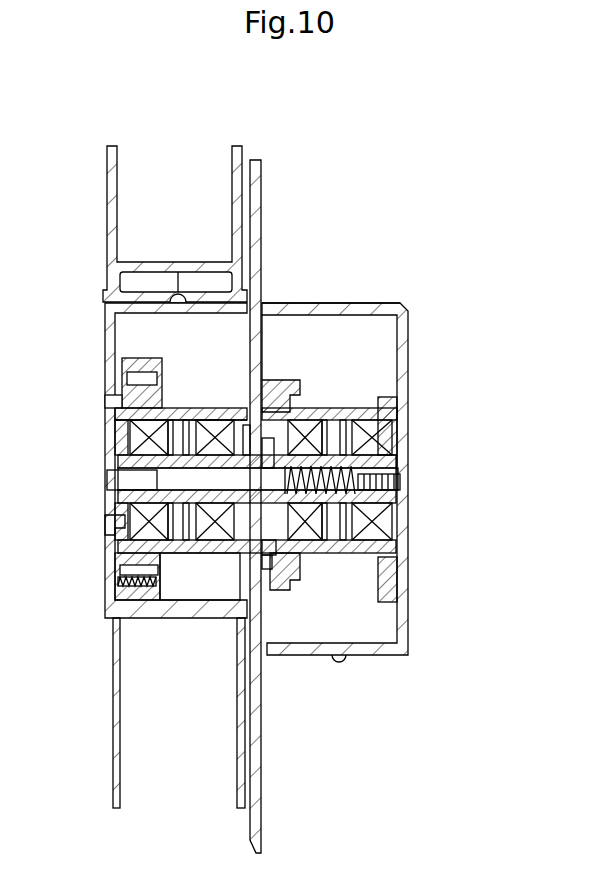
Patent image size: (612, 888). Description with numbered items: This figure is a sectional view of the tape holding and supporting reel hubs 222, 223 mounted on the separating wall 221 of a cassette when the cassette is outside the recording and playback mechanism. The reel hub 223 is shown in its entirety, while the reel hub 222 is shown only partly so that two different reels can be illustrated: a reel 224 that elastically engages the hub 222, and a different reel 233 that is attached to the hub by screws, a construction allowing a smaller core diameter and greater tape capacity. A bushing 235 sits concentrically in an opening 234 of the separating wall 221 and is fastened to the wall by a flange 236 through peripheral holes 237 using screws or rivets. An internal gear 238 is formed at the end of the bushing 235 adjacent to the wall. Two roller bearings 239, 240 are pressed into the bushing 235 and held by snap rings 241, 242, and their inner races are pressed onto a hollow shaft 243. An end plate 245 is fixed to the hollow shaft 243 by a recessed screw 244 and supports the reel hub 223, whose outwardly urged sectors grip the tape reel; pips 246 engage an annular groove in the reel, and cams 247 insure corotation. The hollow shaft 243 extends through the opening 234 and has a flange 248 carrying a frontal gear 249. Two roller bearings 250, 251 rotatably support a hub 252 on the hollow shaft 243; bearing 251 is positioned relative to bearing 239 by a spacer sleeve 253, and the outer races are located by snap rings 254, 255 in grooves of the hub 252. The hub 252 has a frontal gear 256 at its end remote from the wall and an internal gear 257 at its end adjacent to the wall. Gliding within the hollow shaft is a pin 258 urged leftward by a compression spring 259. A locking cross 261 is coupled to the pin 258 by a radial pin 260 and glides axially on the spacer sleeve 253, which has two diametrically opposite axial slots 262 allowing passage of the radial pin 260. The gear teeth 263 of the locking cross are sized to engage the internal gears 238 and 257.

The separating wall 221 is at (257, 207).
The reel hub 222 is at (112, 322).
The reel hub 223 is at (402, 336).
The reel 224 is at (115, 214).
The reel 233 is at (115, 604).
The opening 234 is at (267, 570).
The bushing 235 is at (290, 510).
The flange 236 is at (279, 380).
The peripheral holes 237 is at (293, 395).
The internal gear 238 is at (278, 408).
The roller bearing 239 is at (306, 428).
The roller bearing 240 is at (372, 430).
The snap ring 241 is at (400, 434).
The snap ring 242 is at (392, 562).
The hollow shaft 243 is at (405, 457).
The recessed screw 244 is at (396, 492).
The end plate 245 is at (398, 545).
The pips 246 is at (336, 300).
The cams 247 is at (341, 664).
The flange 248 is at (115, 500).
The frontal gear 249 is at (112, 524).
The roller bearing 250 is at (160, 522).
The roller bearing 251 is at (215, 522).
The hub 252 is at (213, 408).
The spacer sleeve 253 is at (234, 560).
The snap ring 254 is at (118, 410).
The snap ring 255 is at (193, 412).
The frontal gear 256 is at (115, 542).
The internal gear 257 is at (244, 425).
The pin 258 is at (150, 478).
The compression spring 259 is at (402, 482).
The radial pin 260 is at (158, 479).
The locking cross 261 is at (330, 505).
The axial slots 262 is at (275, 466).
The gear teeth 263 is at (280, 550).